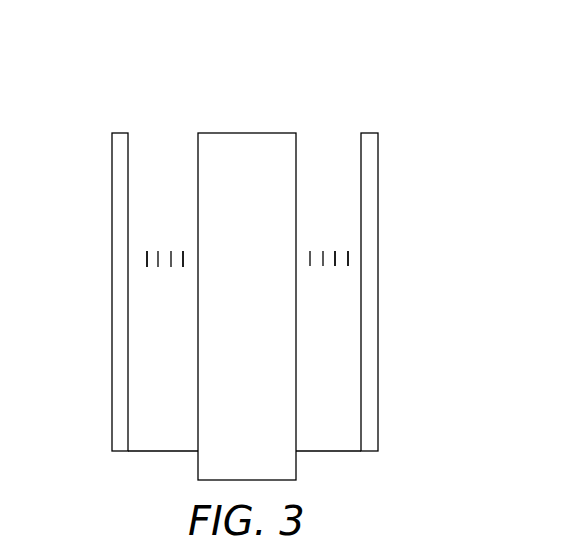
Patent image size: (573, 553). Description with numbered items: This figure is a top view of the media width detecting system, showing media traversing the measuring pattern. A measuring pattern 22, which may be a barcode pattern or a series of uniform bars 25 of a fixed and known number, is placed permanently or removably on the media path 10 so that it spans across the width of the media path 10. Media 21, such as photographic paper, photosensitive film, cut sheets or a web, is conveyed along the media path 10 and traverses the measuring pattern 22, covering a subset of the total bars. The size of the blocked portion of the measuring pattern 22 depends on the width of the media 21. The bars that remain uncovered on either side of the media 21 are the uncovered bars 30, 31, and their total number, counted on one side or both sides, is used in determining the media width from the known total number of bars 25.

The media path 10 is at (156, 213).
The media 21 is at (284, 133).
The measuring pattern 22 is at (153, 250).
The uncovered bars 30 is at (156, 291).
The uncovered bars 31 is at (334, 241).
The uniform bars 25 is at (335, 263).